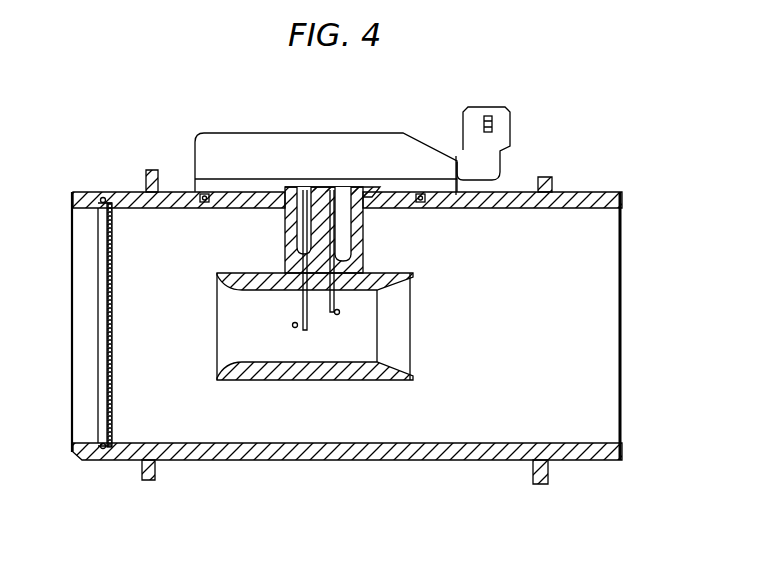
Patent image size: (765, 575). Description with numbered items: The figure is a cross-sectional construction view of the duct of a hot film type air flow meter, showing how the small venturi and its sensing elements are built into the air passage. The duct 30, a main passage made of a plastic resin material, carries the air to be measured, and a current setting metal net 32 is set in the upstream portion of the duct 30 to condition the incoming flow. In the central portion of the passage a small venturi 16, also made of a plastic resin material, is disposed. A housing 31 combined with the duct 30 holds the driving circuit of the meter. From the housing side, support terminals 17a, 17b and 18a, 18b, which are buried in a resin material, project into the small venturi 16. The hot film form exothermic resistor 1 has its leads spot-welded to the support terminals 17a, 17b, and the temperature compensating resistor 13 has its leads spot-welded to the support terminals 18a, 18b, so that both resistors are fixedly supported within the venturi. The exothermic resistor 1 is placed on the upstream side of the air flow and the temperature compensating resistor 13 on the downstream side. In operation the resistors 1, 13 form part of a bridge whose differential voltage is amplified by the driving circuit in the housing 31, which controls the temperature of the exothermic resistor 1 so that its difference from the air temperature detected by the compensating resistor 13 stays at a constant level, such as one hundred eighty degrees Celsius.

The hot film form exothermic resistor 1 is at (294, 327).
The temperature compensating resistor 13 is at (337, 314).
The small venturi 16 is at (403, 380).
The support terminal 17a is at (292, 188).
The support terminal 17b is at (303, 189).
The support terminal 18a is at (346, 189).
The support terminal 18b is at (353, 190).
The duct 30 is at (207, 450).
The housing 31 is at (316, 144).
The current setting metal net 32 is at (108, 250).